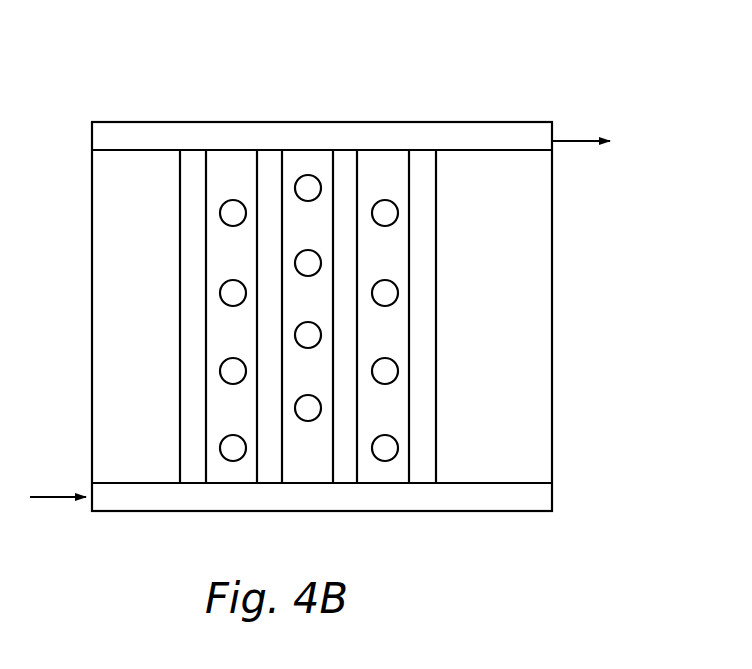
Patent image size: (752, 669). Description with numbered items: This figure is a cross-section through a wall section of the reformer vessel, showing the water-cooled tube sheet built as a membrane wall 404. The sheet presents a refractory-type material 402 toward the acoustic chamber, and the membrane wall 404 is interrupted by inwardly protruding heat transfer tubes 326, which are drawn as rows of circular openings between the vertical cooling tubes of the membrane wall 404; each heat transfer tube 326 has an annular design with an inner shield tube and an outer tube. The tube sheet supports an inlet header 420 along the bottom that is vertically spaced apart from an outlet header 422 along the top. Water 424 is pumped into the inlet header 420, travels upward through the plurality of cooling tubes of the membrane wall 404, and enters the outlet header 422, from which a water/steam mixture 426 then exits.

The heat transfer tube 326 is at (237, 200).
The refractory-type material 402 is at (508, 223).
The membrane wall 404 is at (436, 278).
The inlet header 420 is at (536, 501).
The outlet header 422 is at (397, 140).
The water 424 is at (62, 496).
The water/steam mixture 426 is at (576, 140).